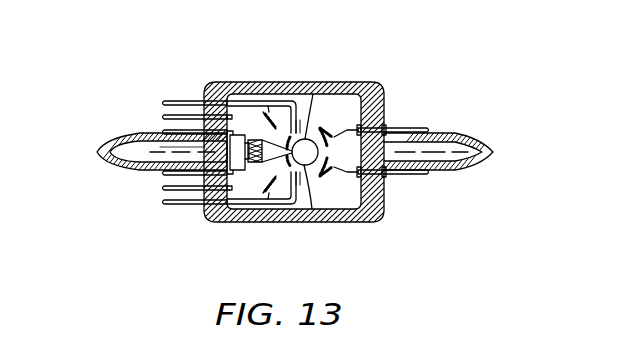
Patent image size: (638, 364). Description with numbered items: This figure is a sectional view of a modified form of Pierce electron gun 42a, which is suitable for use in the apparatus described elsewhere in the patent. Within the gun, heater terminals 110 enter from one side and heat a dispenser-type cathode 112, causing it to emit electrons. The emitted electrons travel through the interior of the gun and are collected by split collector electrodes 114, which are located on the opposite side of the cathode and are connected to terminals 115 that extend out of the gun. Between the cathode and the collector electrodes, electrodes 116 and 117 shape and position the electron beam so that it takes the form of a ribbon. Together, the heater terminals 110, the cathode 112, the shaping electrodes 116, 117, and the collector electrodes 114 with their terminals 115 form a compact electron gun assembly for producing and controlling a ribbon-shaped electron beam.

The Pierce electron gun 42a is at (398, 48).
The heater terminals 110 is at (219, 108).
The dispenser-type cathode 112 is at (253, 139).
The split collector electrodes 114 is at (330, 132).
The terminals 115 is at (411, 128).
The electrodes 116 is at (283, 97).
The electrodes 117 is at (313, 94).